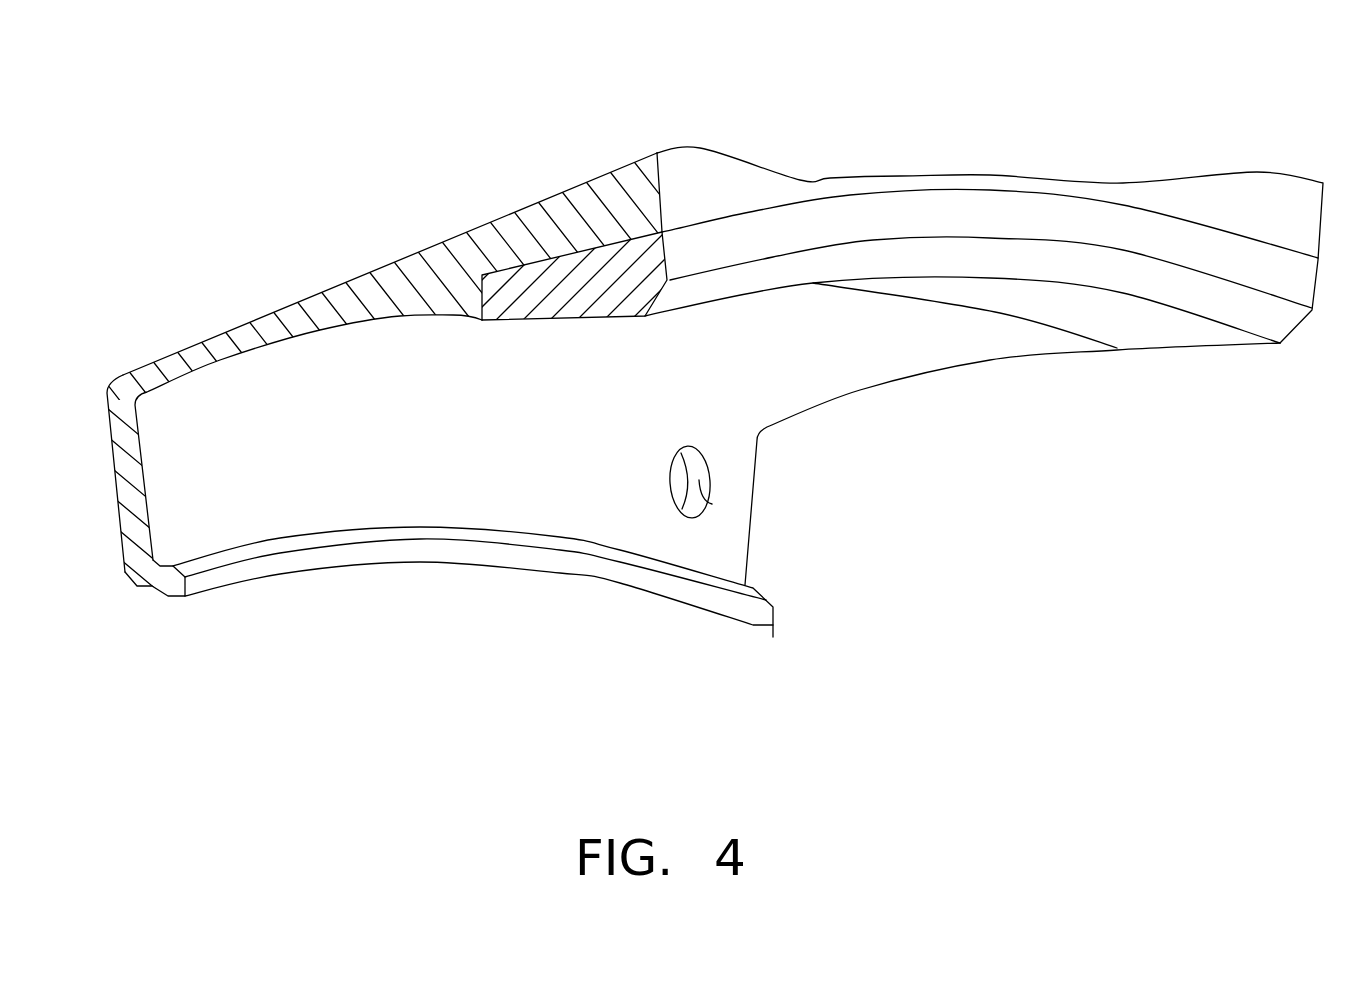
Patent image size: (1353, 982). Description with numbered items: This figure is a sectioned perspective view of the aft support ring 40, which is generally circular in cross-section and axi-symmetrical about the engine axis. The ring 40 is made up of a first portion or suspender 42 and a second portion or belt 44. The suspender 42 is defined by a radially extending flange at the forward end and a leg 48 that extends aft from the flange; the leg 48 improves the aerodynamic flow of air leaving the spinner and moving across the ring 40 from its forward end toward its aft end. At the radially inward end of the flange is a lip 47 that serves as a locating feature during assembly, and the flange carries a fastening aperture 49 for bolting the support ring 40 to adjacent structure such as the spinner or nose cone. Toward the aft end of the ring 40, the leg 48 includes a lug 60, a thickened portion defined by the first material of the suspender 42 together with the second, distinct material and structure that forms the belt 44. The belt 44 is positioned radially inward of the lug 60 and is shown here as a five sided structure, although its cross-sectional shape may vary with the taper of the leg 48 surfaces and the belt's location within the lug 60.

The aft support ring 40 is at (695, 351).
The suspender 42 is at (178, 333).
The belt 44 is at (567, 293).
The lip 47 is at (159, 592).
The leg 48 is at (403, 261).
The fastening aperture 49 is at (713, 508).
The lug 60 is at (555, 186).